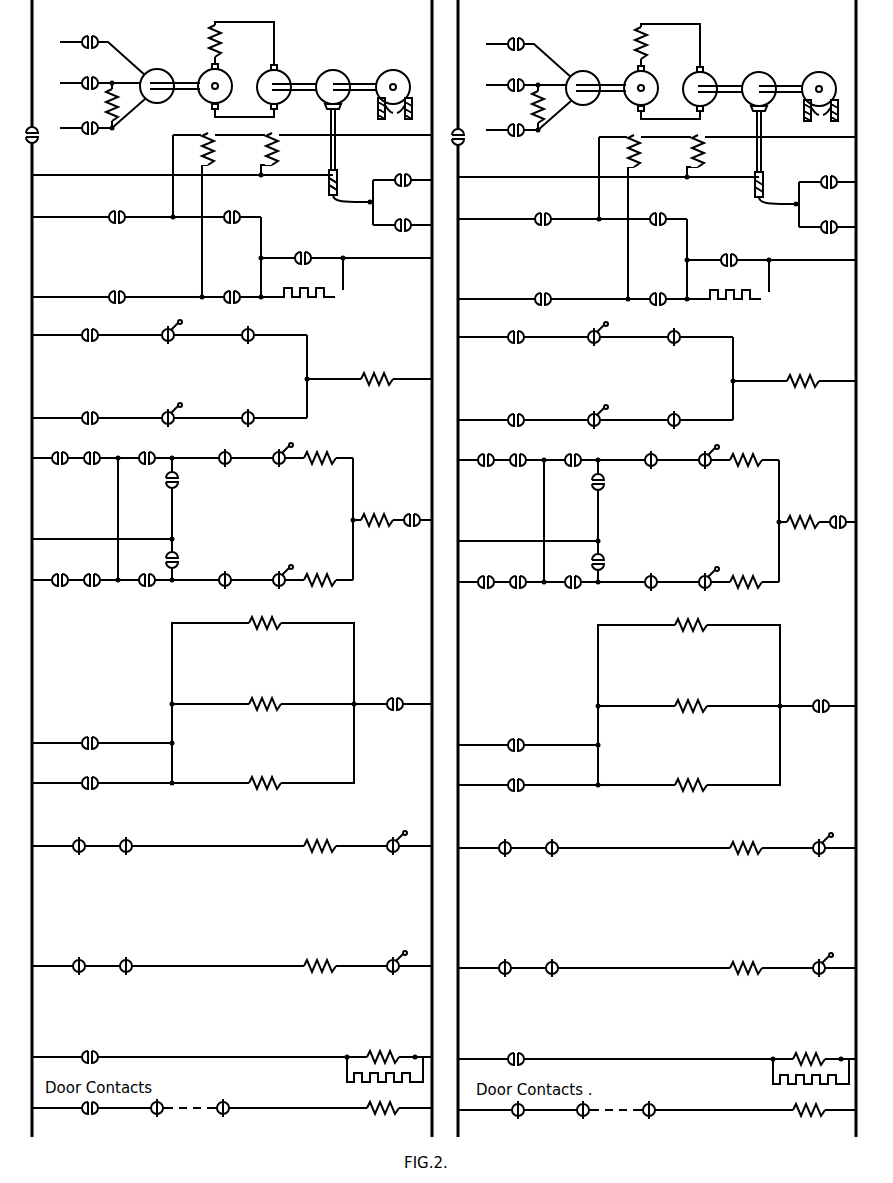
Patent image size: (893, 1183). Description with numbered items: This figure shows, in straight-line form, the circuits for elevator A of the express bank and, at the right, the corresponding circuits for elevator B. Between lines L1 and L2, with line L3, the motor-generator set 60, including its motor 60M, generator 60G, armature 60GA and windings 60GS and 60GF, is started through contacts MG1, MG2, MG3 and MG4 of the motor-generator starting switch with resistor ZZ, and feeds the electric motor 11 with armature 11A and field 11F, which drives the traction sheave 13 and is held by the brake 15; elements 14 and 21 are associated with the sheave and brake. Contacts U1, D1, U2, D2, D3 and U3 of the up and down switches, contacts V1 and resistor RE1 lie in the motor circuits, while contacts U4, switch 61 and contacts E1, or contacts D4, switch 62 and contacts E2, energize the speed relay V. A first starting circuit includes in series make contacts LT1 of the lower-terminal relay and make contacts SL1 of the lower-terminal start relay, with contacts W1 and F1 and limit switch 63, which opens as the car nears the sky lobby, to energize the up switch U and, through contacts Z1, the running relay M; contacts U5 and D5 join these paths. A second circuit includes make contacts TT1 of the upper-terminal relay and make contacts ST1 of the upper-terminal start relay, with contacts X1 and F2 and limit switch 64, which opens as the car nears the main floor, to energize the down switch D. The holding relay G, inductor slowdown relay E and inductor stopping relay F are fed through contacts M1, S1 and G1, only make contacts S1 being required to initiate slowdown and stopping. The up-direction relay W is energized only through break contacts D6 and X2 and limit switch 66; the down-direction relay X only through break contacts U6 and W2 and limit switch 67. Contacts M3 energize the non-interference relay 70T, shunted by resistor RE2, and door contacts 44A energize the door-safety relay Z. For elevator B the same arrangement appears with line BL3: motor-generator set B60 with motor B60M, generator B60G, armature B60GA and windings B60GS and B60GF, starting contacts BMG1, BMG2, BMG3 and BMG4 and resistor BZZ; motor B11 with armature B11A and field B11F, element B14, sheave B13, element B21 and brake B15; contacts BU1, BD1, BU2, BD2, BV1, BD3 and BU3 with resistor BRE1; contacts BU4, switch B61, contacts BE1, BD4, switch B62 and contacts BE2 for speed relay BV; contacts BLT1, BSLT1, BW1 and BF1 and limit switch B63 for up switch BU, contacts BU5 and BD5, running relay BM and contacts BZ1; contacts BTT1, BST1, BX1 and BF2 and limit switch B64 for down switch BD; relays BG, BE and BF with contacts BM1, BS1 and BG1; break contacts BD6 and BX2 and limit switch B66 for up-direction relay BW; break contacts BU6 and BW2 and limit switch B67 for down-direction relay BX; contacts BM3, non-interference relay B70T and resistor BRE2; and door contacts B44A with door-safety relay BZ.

The supply line L1 is at (32, 13).
The supply line L2 is at (432, 12).
The line L3 is at (32, 371).
The motor generator contact MG1 is at (92, 37).
The motor generator contact MG2 is at (89, 78).
The motor generator contact MG3 is at (90, 134).
The motor generator contact MG4 is at (35, 144).
The resistor ZZ is at (104, 102).
The motor-generator set 60 is at (170, 45).
The drive motor 60M is at (155, 104).
The generator 60G is at (203, 88).
The generator armature 60GA is at (203, 71).
The generator series field 60GS is at (209, 34).
The generator shunt field 60GF is at (222, 147).
The hoist motor armature 11A is at (281, 73).
The electric motor 11 is at (302, 112).
The hoist motor field 11F is at (281, 148).
The brake 14 is at (340, 72).
The traction sheave 13 is at (396, 72).
The brake shoes 21 is at (395, 113).
The brake 15 is at (334, 150).
The up relay contact U1 is at (406, 173).
The down relay contact D1 is at (406, 218).
The up relay contact U2 is at (118, 211).
The down relay contact D2 is at (242, 205).
The relay contact V1 is at (302, 252).
The down relay contact D3 is at (114, 291).
The up relay contact U3 is at (238, 291).
The resistor RE1 is at (306, 282).
The up relay contact U4 is at (92, 329).
The switch 61 is at (164, 326).
The contact E1 is at (252, 331).
The speed relay V is at (376, 372).
The down relay contact D4 is at (100, 408).
The switch 62 is at (165, 409).
The contact E2 is at (252, 414).
The make contacts of lower-terminal relay LT1 is at (62, 452).
The make contacts of lower-terminal start relay SL1 is at (94, 452).
The contact W1 is at (155, 448).
The contact F1 is at (224, 452).
The limit switch 63 is at (275, 449).
The up switch U is at (322, 453).
The up relay contact U5 is at (178, 485).
The running relay M is at (376, 514).
The contact Z1 is at (409, 531).
The down relay contact D5 is at (184, 542).
The make contacts of upper-terminal relay TT1 is at (62, 574).
The make contacts of upper-terminal start relay ST1 is at (91, 588).
The contact X1 is at (148, 574).
The contact F2 is at (230, 571).
The limit switch 64 is at (277, 571).
The down switch D is at (325, 571).
The holding relay G is at (260, 630).
The inductor slowdown relay E is at (265, 698).
The inductor stopping relay F is at (266, 777).
The contact M1 is at (398, 693).
The make contacts of floor or corridor-call stopping relay S1 is at (98, 741).
The contact G1 is at (98, 781).
The break contacts of down switch D6 is at (74, 841).
The break contacts of down-direction relay X2 is at (124, 841).
The up-direction relay W is at (326, 840).
The limit switch 66 is at (389, 836).
The break contacts of up switch U6 is at (74, 961).
The break contacts of up-direction relay W2 is at (124, 961).
The down-direction relay X is at (326, 960).
The limit switch 67 is at (389, 956).
The contact M3 is at (91, 1051).
The non-interference relay 70T is at (383, 1045).
The resistor RE2 is at (347, 1083).
The door contact 44A is at (92, 1115).
The door-safety relay Z is at (372, 1116).
The motor generator contact BMG1 is at (506, 33).
The motor generator contact BMG2 is at (494, 76).
The motor generator contact BMG3 is at (538, 142).
The motor generator contact BMG4 is at (479, 147).
The resistor BZZ is at (508, 107).
The motor generator set B60 is at (579, 37).
The drive motor B60M is at (575, 106).
The generator B60G is at (623, 94).
The generator armature B60GA is at (593, 71).
The generator series field B60GS is at (615, 32).
The generator shunt field B60GF is at (660, 142).
The hoist motor armature B11A is at (715, 79).
The hoist motor B11 is at (721, 105).
The hoist motor field B11F is at (717, 154).
The brake B14 is at (773, 78).
The drive sheave B13 is at (822, 78).
The brake shoes B21 is at (801, 117).
The brake coil B15 is at (776, 170).
The up relay contact BU1 is at (823, 170).
The down relay contact BD1 is at (823, 215).
The up relay contact BU2 is at (532, 208).
The down relay contact BD2 is at (652, 208).
The relay contact BV1 is at (731, 249).
The down relay contact BD3 is at (539, 288).
The up relay contact BU3 is at (651, 288).
The resistor BRE1 is at (747, 305).
The up relay contact BU4 is at (503, 329).
The switch B61 is at (584, 330).
The contact BE1 is at (666, 330).
The line BL3 is at (476, 749).
The relay coil BV is at (799, 367).
The down relay contact BD4 is at (502, 410).
The switch B62 is at (584, 411).
The contact BE2 is at (686, 411).
The contact BLT1 is at (477, 450).
The contact BSLT1 is at (528, 450).
The contact BW1 is at (581, 450).
The contact BF1 is at (640, 451).
The switch B63 is at (695, 451).
The up relay coil BU is at (750, 450).
The up relay contact BU5 is at (616, 488).
The relay coil BM is at (801, 510).
The contact BZ1 is at (831, 534).
The down relay contact BD5 is at (616, 559).
The contact BTT1 is at (479, 572).
The contact BST1 is at (511, 592).
The contact BX1 is at (565, 572).
The contact BF2 is at (629, 591).
The switch B64 is at (698, 573).
The down relay coil BD is at (746, 572).
The relay coil BG is at (688, 640).
The relay coil BE is at (691, 694).
The relay coil BF is at (691, 774).
The contact BM1 is at (811, 695).
The contact BS1 is at (531, 736).
The contact BG1 is at (532, 776).
The contact BD6 is at (489, 838).
The contact BX2 is at (545, 838).
The relay coil BW is at (746, 834).
The switch B66 is at (811, 838).
The contact BU6 is at (490, 959).
The contact BW2 is at (551, 959).
The relay coil BX is at (744, 958).
The switch B67 is at (810, 959).
The contact BM3 is at (510, 1047).
The timing relay coil B70T is at (803, 1047).
The resistor BRE2 is at (774, 1076).
The door contact B44A is at (537, 1119).
The relay coil BZ is at (795, 1119).